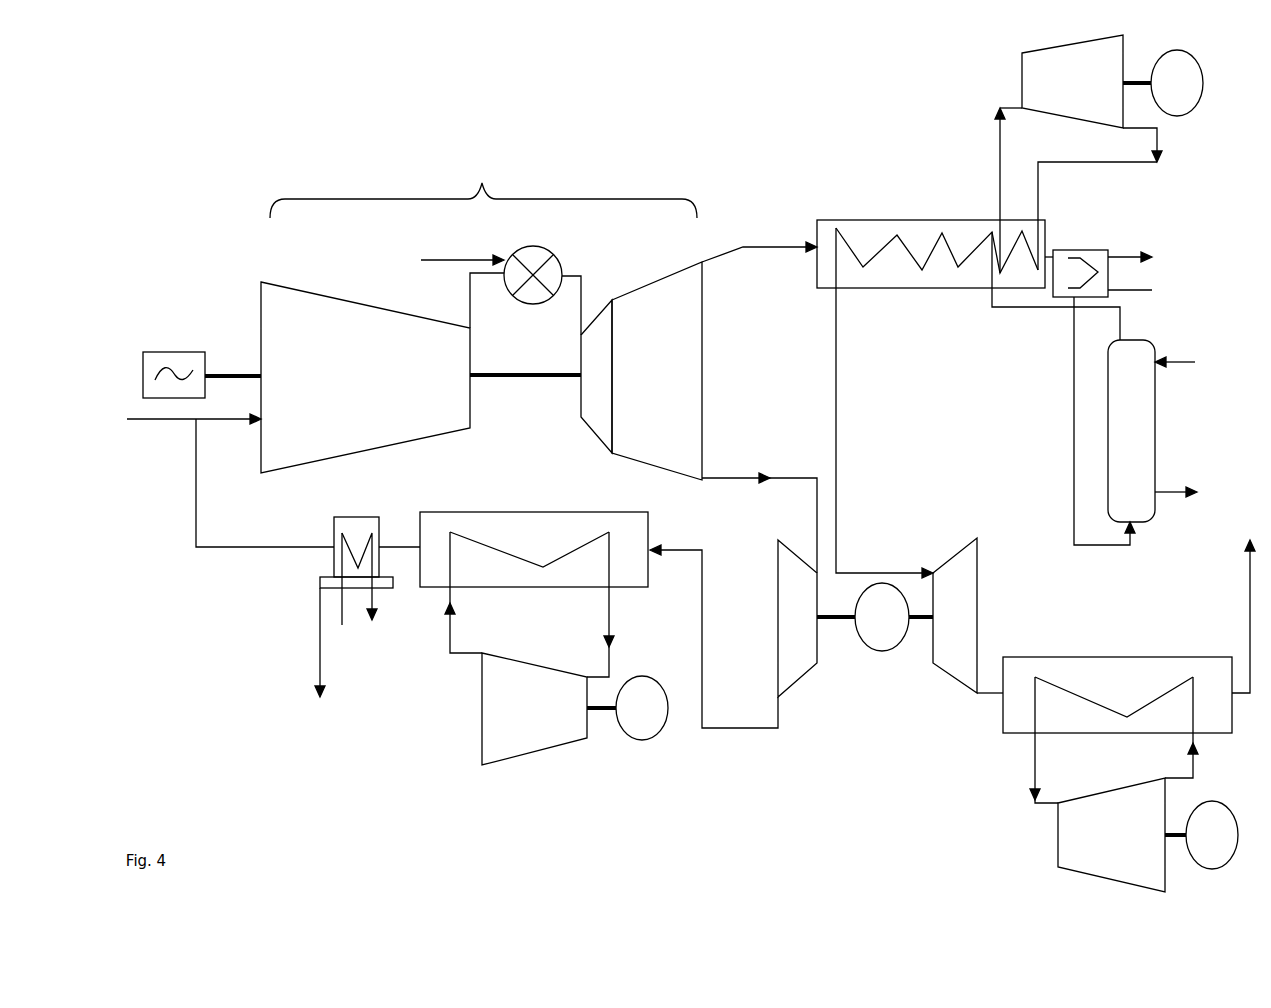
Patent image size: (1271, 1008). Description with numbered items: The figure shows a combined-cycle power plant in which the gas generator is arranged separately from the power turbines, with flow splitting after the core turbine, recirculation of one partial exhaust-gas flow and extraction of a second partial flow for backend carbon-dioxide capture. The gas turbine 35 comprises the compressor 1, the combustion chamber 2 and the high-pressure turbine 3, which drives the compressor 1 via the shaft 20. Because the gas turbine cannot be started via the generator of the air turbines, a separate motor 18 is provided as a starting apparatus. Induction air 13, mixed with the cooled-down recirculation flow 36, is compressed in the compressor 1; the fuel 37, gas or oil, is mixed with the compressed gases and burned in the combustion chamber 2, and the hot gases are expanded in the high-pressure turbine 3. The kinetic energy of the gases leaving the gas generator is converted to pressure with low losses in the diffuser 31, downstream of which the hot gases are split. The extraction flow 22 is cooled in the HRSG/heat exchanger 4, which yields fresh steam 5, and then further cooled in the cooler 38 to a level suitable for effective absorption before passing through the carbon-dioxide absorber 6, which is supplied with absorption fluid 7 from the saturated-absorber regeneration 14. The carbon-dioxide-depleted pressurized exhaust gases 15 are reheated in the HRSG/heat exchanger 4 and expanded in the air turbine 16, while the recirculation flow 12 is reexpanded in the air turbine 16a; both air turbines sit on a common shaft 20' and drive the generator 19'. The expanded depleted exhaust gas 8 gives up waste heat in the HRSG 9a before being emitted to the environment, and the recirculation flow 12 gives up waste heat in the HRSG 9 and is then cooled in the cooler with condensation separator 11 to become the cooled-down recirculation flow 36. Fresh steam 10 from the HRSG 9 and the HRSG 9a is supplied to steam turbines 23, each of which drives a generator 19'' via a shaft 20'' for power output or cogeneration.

The compressor 1 is at (365, 377).
The combustion chamber 2 is at (525, 272).
The high-pressure turbine 3 is at (596, 376).
The HRSG/heat exchanger 4 is at (968, 280).
The fresh steam for the steam turbine/cogeneration 5 is at (992, 190).
The CO2 absorber 6 is at (1114, 421).
The CO2 absorption fluid 7 is at (1178, 348).
The CO2-depleted exhaust gas 8 is at (1243, 616).
The HRSG 9 is at (534, 549).
The HRSG 9a is at (1117, 695).
The fresh steam for the steam turbine/cogeneration 10 is at (821, 667).
The cooler with condensation separator 11 is at (367, 594).
The recirculation flow 12 is at (759, 514).
The induction air 13 is at (194, 433).
The CO2-saturated absorber regeneration 14 is at (1181, 473).
The CO2-depleted pressurized exhaust gases 15 is at (884, 403).
The air turbine 16 is at (968, 615).
The air turbine 16a is at (733, 634).
The motor 18 is at (174, 357).
The generator 19' is at (882, 617).
The generator 19'' is at (927, 459).
The shaft 20 is at (233, 360).
The shaft 20' is at (875, 661).
The shaft 20'' is at (895, 463).
The extraction flow 22 is at (759, 243).
The steam turbine 23 is at (823, 463).
The diffuser 31 is at (657, 371).
The gas turbine 35 is at (483, 190).
The cooled-down recirculation flow 36 is at (265, 498).
The fuel 37 is at (462, 249).
The cooler 38 is at (1098, 257).